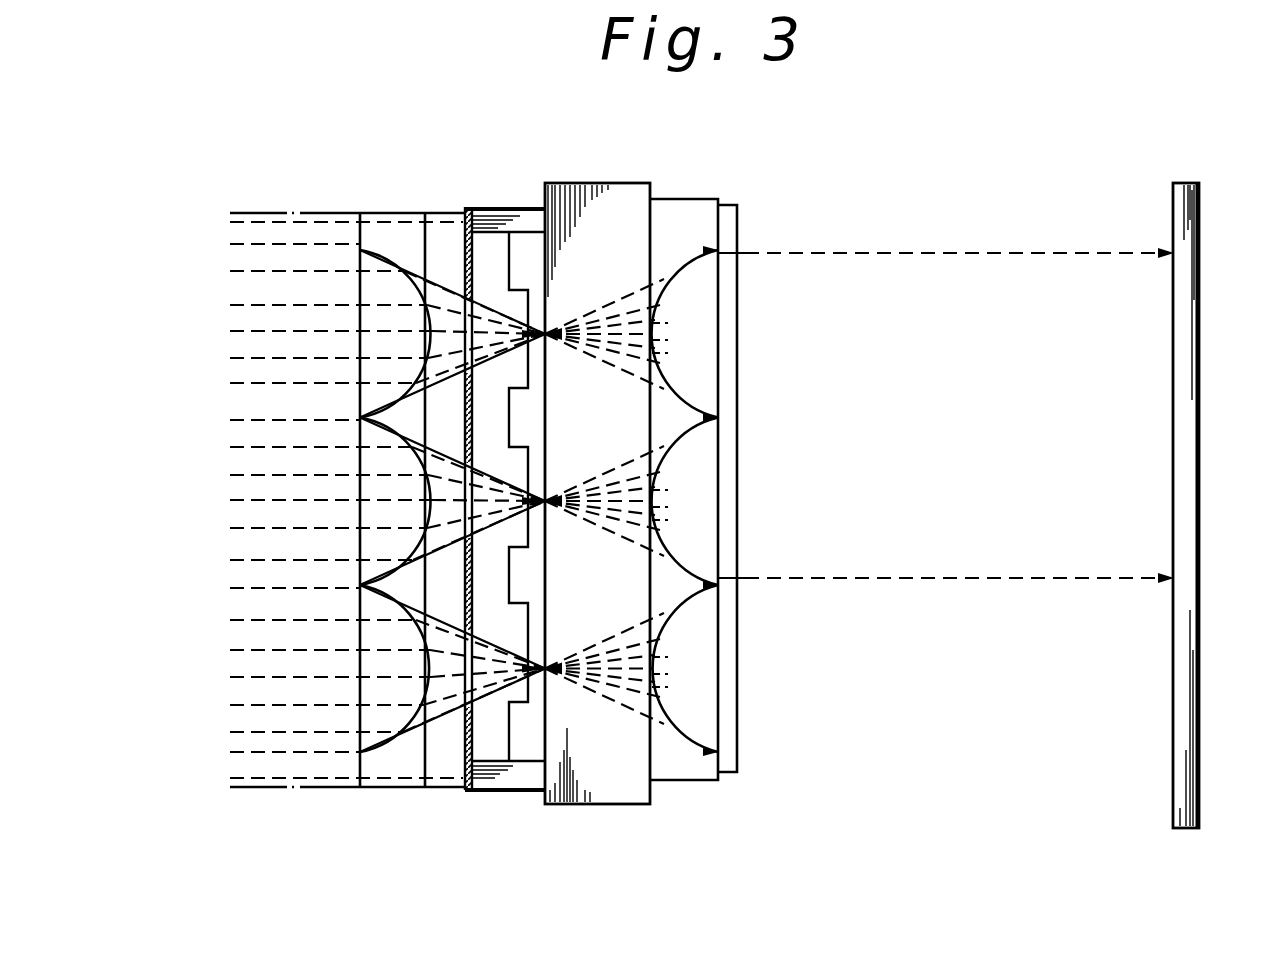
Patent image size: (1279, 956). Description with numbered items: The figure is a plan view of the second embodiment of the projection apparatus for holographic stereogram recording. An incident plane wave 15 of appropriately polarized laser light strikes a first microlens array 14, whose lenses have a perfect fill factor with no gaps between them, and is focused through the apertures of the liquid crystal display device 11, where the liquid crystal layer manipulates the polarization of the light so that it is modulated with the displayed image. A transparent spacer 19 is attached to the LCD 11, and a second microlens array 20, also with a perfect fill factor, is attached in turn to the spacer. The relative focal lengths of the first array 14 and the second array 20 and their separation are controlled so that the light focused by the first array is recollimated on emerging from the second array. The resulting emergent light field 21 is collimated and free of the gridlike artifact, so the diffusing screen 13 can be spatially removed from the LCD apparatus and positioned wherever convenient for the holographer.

The liquid crystal display device 11 is at (511, 207).
The diffusing screen 13 is at (1185, 222).
The microlens array 14 is at (386, 212).
The plane wave 15 is at (232, 420).
The transparent spacer 19 is at (616, 786).
The second microlens array 20 is at (699, 208).
The light field 21 is at (1037, 268).